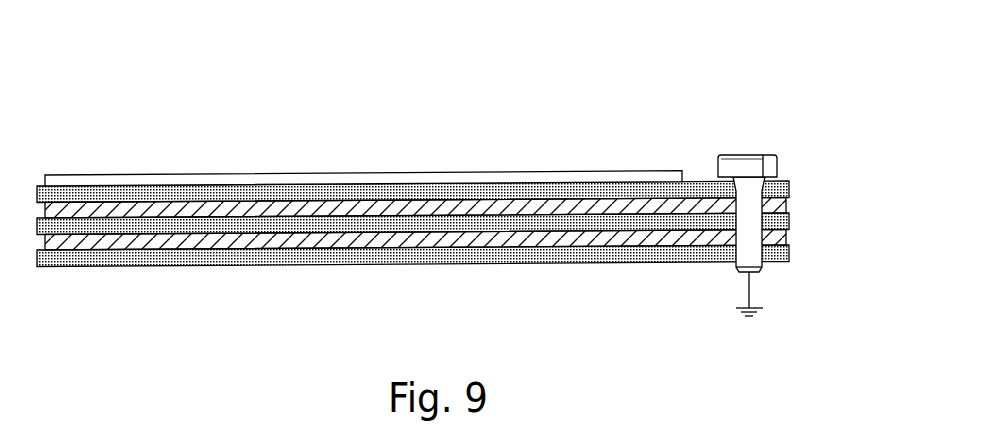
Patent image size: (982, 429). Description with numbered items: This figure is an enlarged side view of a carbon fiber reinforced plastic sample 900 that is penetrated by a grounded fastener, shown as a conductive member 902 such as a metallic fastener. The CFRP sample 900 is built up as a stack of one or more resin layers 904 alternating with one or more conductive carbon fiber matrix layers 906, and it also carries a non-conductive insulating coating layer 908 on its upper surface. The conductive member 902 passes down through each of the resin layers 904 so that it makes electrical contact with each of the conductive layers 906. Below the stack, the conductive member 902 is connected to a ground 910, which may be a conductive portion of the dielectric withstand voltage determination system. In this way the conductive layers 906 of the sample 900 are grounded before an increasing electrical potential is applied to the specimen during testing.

The CFRP sample 900 is at (192, 96).
The conductive member 902 is at (751, 152).
The resin layers 904 is at (791, 188).
The conductive carbon fiber matrix layers 906 is at (791, 237).
The non-conductive insulating coating layer 908 is at (416, 171).
The ground 910 is at (755, 325).